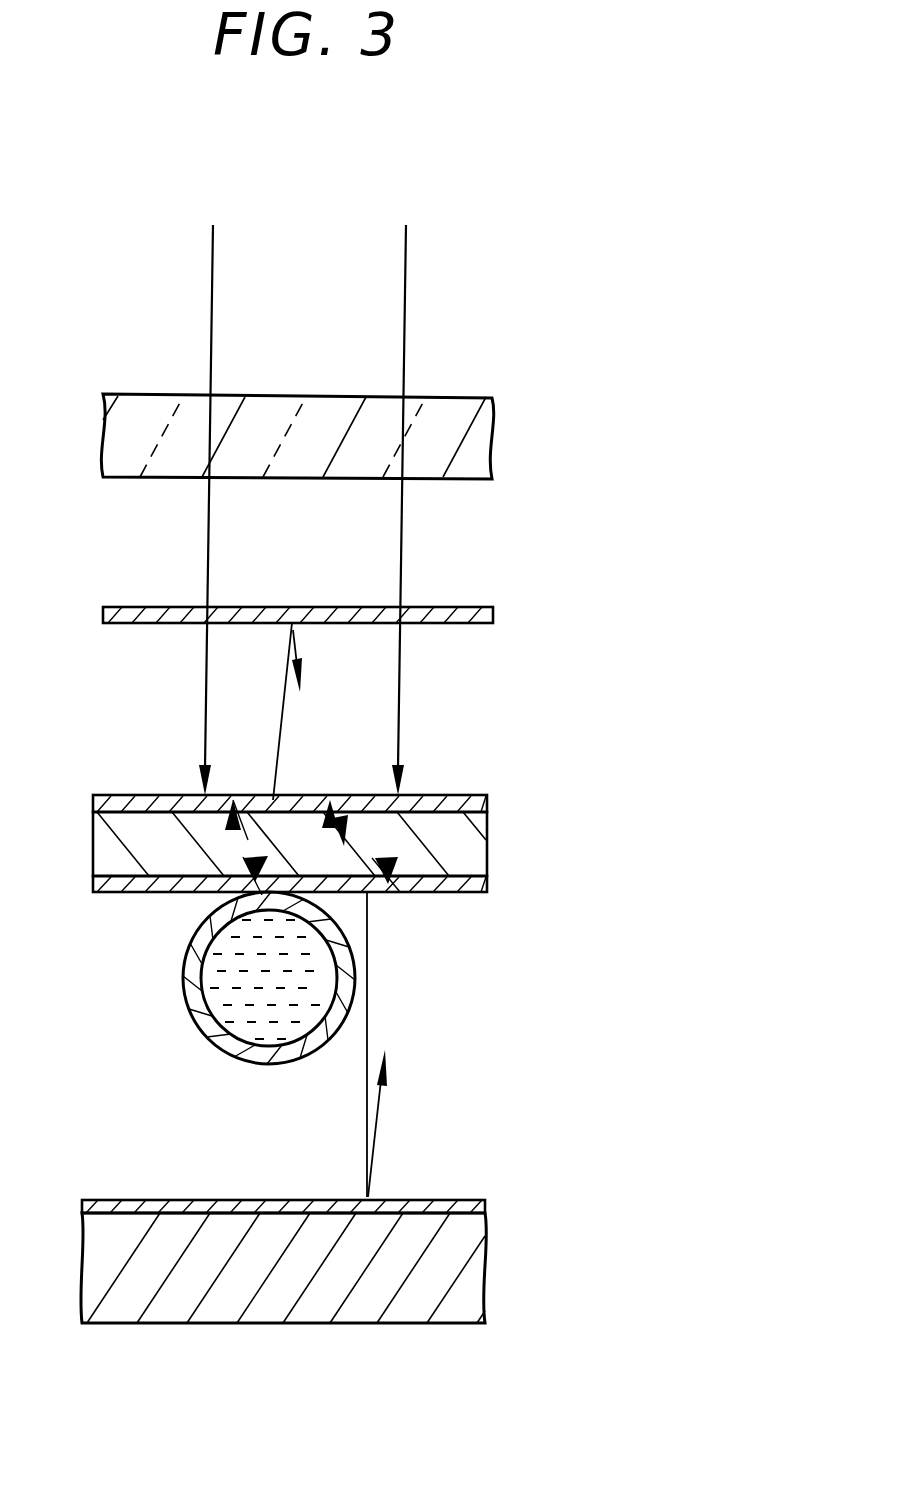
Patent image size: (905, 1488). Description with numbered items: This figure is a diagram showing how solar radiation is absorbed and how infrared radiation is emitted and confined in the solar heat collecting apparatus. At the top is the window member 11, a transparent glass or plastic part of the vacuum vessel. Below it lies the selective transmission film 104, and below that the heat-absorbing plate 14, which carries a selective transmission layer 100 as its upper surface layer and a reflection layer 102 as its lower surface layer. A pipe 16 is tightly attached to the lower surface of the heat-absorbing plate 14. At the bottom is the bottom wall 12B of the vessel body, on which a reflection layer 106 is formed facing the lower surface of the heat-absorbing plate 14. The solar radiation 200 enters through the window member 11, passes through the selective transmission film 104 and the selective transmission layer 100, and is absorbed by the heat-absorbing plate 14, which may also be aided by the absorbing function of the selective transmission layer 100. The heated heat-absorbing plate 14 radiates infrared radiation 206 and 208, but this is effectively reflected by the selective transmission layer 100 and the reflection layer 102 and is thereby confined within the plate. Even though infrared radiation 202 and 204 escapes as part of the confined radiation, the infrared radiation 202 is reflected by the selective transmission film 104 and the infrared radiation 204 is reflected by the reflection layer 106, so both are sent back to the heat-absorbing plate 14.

The solar radiation 200 is at (405, 316).
The window member 11 is at (462, 397).
The selective transmission film 104 is at (462, 624).
The infrared radiation 202 is at (283, 727).
The infrared radiation 206 is at (322, 802).
The selective transmission layer 100 is at (468, 797).
The heat-absorbing plate 14 is at (470, 846).
The reflection layer 102 is at (470, 893).
The infrared radiation 208 is at (402, 896).
The pipe 16 is at (181, 978).
The infrared radiation 204 is at (367, 1017).
The reflection layer 106 is at (458, 1200).
The bottom wall 12B is at (458, 1276).